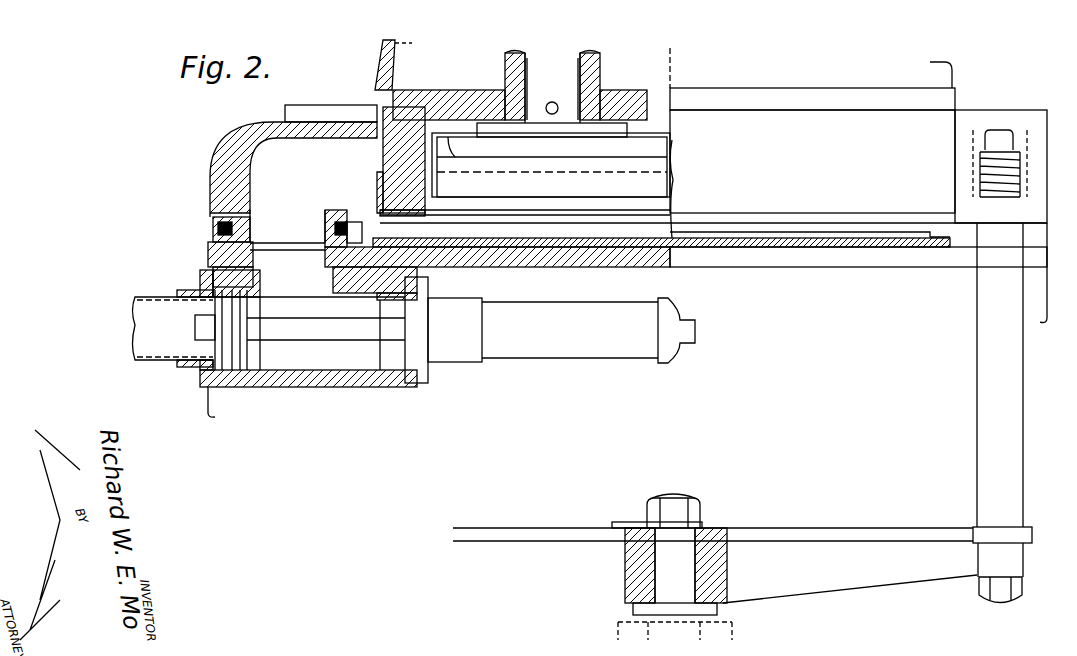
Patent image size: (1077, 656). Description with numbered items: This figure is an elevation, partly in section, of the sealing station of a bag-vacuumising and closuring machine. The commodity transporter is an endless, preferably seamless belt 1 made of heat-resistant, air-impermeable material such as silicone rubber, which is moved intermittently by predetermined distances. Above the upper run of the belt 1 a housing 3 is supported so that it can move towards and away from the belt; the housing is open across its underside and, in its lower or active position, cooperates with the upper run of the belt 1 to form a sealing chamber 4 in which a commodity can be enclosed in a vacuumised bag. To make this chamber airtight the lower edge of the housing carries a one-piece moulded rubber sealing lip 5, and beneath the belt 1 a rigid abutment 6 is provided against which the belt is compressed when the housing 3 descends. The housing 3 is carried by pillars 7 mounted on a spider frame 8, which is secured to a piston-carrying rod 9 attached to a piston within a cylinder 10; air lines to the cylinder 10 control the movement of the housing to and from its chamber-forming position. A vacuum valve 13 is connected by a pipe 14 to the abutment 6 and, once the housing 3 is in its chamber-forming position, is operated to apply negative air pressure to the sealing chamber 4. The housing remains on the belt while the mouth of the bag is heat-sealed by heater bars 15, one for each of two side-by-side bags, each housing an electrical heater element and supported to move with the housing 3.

The belt 1 is at (826, 252).
The housing 3 is at (235, 152).
The sealing chamber 4 is at (613, 226).
The sealing lip 5 is at (757, 228).
The abutment 6 is at (733, 262).
The pillars 7 is at (985, 348).
The spider frame 8 is at (815, 530).
The piston-carrying rod 9 is at (633, 612).
The cylinder 10 is at (733, 627).
The vacuum valve 13 is at (290, 358).
The pipe 14 is at (172, 298).
The heater bars 15 is at (668, 181).